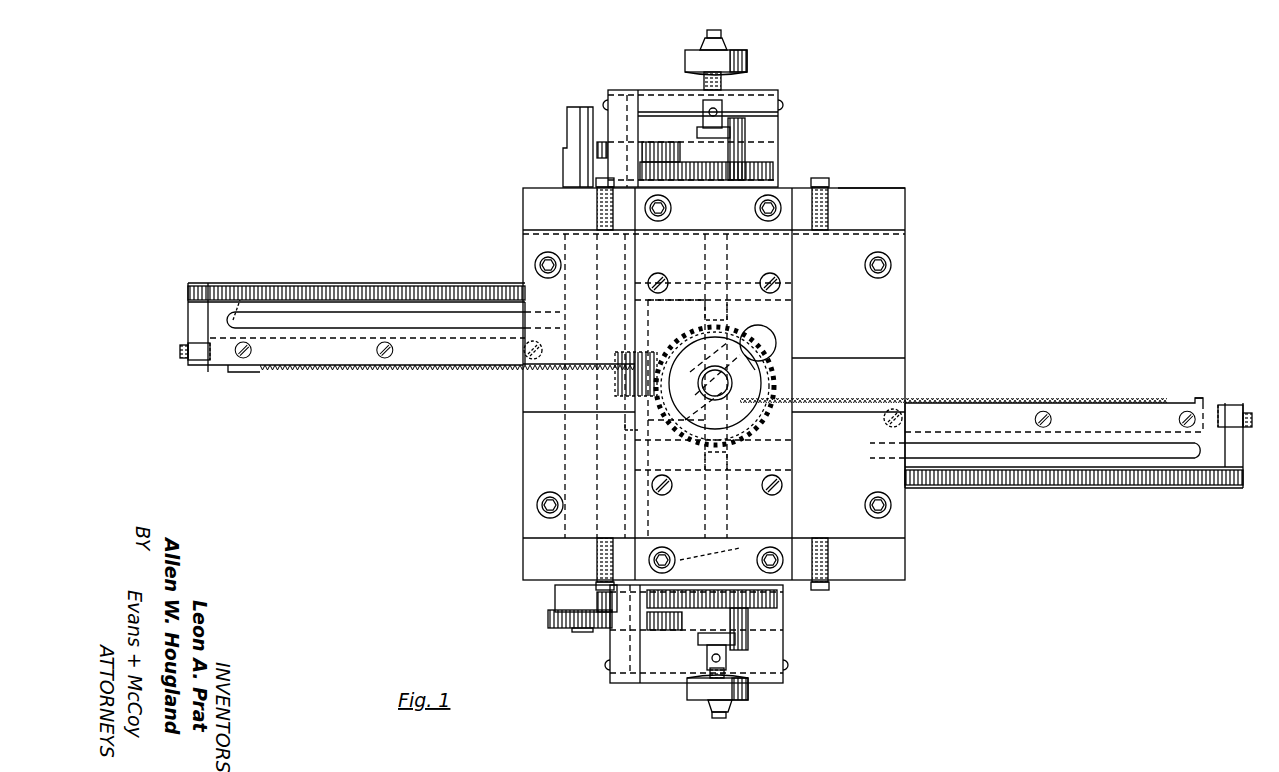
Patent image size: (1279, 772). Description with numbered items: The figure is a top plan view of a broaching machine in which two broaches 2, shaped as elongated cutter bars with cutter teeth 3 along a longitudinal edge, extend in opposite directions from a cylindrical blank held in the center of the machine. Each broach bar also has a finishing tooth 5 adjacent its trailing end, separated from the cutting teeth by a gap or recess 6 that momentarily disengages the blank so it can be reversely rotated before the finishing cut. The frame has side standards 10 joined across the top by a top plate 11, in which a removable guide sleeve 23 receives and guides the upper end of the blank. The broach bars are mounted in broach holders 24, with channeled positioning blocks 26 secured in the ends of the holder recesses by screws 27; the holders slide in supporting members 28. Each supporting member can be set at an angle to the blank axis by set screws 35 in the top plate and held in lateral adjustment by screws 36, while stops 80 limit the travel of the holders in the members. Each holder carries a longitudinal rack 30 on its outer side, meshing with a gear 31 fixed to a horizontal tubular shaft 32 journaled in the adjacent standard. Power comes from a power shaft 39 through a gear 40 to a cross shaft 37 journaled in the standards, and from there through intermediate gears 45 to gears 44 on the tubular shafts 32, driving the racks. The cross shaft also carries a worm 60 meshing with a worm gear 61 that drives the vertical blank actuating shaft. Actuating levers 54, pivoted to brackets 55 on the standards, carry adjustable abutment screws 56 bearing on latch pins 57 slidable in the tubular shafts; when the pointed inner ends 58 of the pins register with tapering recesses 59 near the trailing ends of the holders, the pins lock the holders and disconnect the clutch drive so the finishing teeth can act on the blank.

The broach 2 is at (318, 372).
The cutter teeth 3 is at (405, 372).
The finishing tooth 5 is at (228, 372).
The gap or recess 6 is at (248, 372).
The side standard 10 is at (884, 190).
The top plate 11 is at (852, 254).
The guide sleeve 23 is at (750, 415).
The broach holder 24 is at (365, 312).
The positioning block 26 is at (200, 360).
The screw 27 is at (182, 358).
The supporting member 28 is at (900, 318).
The rack 30 is at (296, 283).
The gear 31 is at (731, 389).
The tubular shaft 32 is at (745, 128).
The set screw 35 is at (664, 276).
The screw 36 is at (597, 205).
The cross shaft 37 is at (621, 442).
The power shaft 39 is at (563, 162).
The gear 40 is at (548, 618).
The gear 44 is at (773, 170).
The intermediate gears 45 is at (597, 148).
The actuating lever 54 is at (770, 715).
The bracket 55 is at (608, 92).
The adjustable abutment screw 56 is at (713, 38).
The latch pin 57 is at (703, 110).
The pointed inner end 58 is at (700, 328).
The tapering recess 59 is at (240, 283).
The worm 60 is at (625, 350).
The worm gear 61 is at (770, 375).
The stop 80 is at (755, 320).